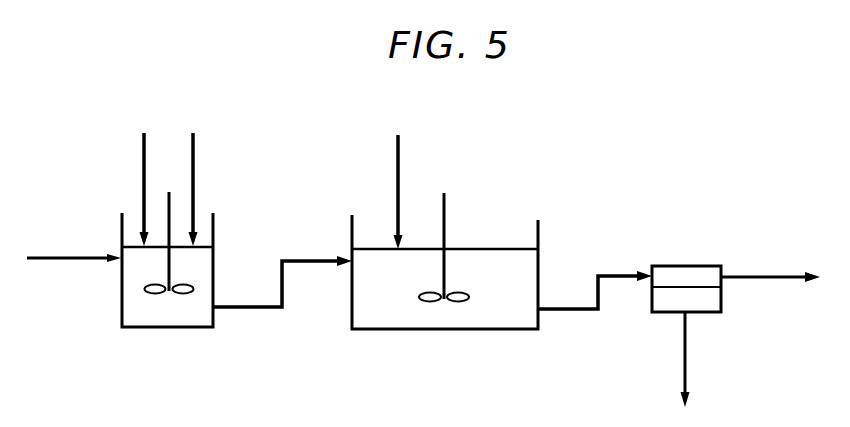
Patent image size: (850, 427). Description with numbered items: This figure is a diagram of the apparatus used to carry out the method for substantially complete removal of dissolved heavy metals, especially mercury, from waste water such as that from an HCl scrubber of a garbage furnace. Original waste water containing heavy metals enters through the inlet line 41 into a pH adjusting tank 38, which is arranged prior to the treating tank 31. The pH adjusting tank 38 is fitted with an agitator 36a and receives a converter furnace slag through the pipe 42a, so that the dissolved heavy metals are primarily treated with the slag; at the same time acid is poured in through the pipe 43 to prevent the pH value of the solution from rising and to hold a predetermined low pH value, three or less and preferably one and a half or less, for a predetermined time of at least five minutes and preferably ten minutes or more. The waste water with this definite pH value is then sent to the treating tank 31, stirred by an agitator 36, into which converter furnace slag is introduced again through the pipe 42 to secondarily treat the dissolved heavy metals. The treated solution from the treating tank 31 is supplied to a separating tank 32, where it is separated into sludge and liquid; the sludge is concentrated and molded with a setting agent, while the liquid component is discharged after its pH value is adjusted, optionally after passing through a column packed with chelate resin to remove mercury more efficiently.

The treating tank 31 is at (378, 330).
The separating tank 32 is at (722, 298).
The agitator 36 is at (457, 301).
The agitator 36a is at (148, 293).
The pH adjusting tank 38 is at (190, 328).
The waste water inlet 41 is at (83, 263).
The slag pipe 42 is at (400, 147).
The slag pipe 42a is at (144, 166).
The acid pipe 43 is at (193, 168).